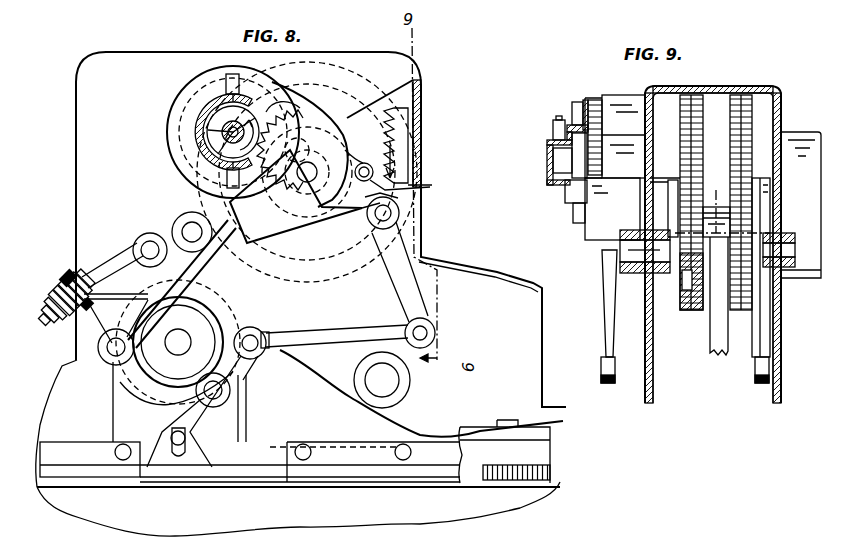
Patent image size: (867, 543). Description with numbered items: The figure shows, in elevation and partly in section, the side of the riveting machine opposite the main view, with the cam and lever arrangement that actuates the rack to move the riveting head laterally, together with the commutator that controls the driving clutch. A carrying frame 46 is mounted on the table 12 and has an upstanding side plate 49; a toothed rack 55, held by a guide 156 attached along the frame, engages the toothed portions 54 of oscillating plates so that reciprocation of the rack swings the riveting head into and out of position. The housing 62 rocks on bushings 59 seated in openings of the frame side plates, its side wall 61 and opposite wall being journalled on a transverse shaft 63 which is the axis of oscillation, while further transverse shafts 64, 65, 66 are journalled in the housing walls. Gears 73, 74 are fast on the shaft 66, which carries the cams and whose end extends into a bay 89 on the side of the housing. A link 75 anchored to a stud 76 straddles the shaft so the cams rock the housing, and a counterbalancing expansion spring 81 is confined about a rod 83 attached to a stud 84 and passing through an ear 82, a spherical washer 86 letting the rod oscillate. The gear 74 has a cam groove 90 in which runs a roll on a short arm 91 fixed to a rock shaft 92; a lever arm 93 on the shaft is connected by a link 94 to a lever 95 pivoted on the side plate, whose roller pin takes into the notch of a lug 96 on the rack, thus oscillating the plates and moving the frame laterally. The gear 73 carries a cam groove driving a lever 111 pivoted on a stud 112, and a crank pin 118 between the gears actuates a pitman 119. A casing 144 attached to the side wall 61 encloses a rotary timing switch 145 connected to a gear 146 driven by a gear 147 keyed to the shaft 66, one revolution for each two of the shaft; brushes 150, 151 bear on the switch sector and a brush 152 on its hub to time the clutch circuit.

In FIG. 8, the table 12 is at (298, 464).
In FIG. 8, the carrying frame 46 is at (298, 468).
In FIG. 8, the side plate 49 is at (421, 393).
In FIG. 8, the toothed portion 54 is at (552, 472).
In FIG. 8, the toothed rack 55 is at (193, 472).
In FIG. 8, the bushing 59 is at (205, 326).
In FIG. 8, the side wall 61 is at (80, 143).
In FIG. 9, the side wall 61 is at (647, 352).
In FIG. 8, the housing 62 is at (299, 229).
In FIG. 9, the housing 62 is at (782, 362).
In FIG. 8, the transverse shaft 63 is at (178, 352).
In FIG. 8, the transverse shaft 64 is at (190, 214).
In FIG. 8, the transverse shaft 65 is at (395, 380).
In FIG. 8, the transverse shaft 66 is at (307, 172).
In FIG. 9, the gear 73 is at (745, 97).
In FIG. 8, the gear 74 is at (403, 128).
In FIG. 9, the gear 74 is at (698, 97).
In FIG. 8, the link 75 is at (205, 272).
In FIG. 8, the stud 76 is at (104, 350).
In FIG. 8, the counterbalancing expansion spring 81 is at (42, 298).
In FIG. 8, the ear 82 is at (80, 277).
In FIG. 8, the rod 83 is at (114, 270).
In FIG. 8, the stud 84 is at (151, 234).
In FIG. 8, the spherical washer 86 is at (116, 309).
In FIG. 9, the bay 89 is at (795, 136).
In FIG. 8, the cam groove 90 is at (351, 143).
In FIG. 9, the cam groove 90 is at (687, 280).
In FIG. 8, the short arm 91 is at (378, 196).
In FIG. 9, the short arm 91 is at (673, 200).
In FIG. 8, the rock shaft 92 is at (377, 225).
In FIG. 9, the rock shaft 92 is at (640, 258).
In FIG. 8, the lever arm 93 is at (390, 266).
In FIG. 9, the lever arm 93 is at (605, 312).
In FIG. 8, the link 94 is at (340, 340).
In FIG. 8, the lever 95 is at (244, 372).
In FIG. 8, the lug 96 is at (197, 457).
In FIG. 9, the lever 111 is at (760, 345).
In FIG. 9, the stud 112 is at (790, 233).
In FIG. 9, the crank pin 118 is at (722, 206).
In FIG. 9, the pitman 119 is at (713, 325).
In FIG. 8, the casing 144 is at (185, 105).
In FIG. 9, the casing 144 is at (622, 95).
In FIG. 8, the rotary timing switch 145 is at (222, 130).
In FIG. 9, the rotary timing switch 145 is at (577, 158).
In FIG. 8, the gear 146 is at (280, 120).
In FIG. 9, the gear 146 is at (594, 100).
In FIG. 8, the gear 147 is at (305, 158).
In FIG. 9, the gear 147 is at (603, 175).
In FIG. 8, the brush 150 is at (226, 82).
In FIG. 9, the brush 150 is at (578, 102).
In FIG. 8, the brush 151 is at (200, 178).
In FIG. 9, the brush 151 is at (570, 210).
In FIG. 9, the brush 152 is at (553, 126).
In FIG. 8, the guide 156 is at (392, 474).